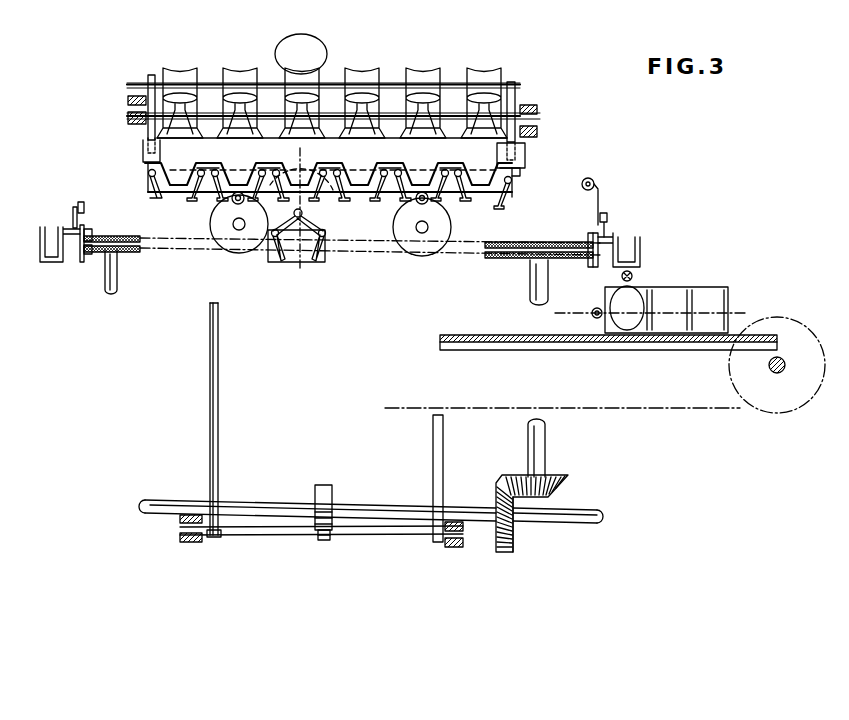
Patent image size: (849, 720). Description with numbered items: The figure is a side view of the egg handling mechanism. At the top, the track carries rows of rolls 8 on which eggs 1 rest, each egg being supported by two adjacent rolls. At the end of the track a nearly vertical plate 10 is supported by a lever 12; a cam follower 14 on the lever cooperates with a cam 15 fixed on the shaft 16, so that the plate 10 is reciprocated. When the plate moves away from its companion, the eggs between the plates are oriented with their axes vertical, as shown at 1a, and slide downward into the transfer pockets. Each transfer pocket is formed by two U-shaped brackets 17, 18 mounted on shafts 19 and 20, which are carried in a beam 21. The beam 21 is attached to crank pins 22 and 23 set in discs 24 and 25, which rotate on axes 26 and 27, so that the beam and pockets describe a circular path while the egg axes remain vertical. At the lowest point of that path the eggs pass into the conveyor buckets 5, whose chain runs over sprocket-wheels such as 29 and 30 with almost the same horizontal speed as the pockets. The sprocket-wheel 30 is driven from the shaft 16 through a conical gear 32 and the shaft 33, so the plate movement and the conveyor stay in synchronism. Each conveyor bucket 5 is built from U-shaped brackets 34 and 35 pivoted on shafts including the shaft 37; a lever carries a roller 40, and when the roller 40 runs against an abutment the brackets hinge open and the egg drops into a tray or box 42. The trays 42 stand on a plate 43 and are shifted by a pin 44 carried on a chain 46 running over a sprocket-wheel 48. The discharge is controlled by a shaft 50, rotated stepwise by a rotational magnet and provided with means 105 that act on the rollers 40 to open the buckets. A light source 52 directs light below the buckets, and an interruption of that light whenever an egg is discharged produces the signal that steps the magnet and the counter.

The egg 1 is at (280, 46).
The egg oriented with vertical axis 1a is at (318, 152).
The conveyor bucket 5 is at (52, 232).
The roll 8 is at (172, 68).
The plate 10 is at (530, 156).
The lever 12 is at (219, 380).
The cam follower 14 is at (330, 536).
The cam 15 is at (324, 485).
The shaft 16 is at (259, 500).
The U-shaped bracket 17 is at (465, 204).
The U-shaped bracket 18 is at (504, 208).
The shaft 19 is at (459, 173).
The shaft 20 is at (516, 180).
The beam 21 is at (146, 182).
The crank pin 22 is at (232, 202).
The crank pin 23 is at (416, 203).
The disc 24 is at (240, 254).
The disc 25 is at (442, 256).
The axis 26 is at (236, 230).
The axis 27 is at (420, 233).
The sprocket-wheel 29 is at (136, 255).
The sprocket-wheel 30 is at (494, 258).
The conical gear 32 is at (568, 477).
The shaft 33 is at (527, 434).
The U-shaped bracket 34 is at (283, 262).
The U-shaped bracket 35 is at (314, 262).
The shaft 37 is at (330, 232).
The roller 40 is at (79, 204).
The tray or box 42 is at (706, 287).
The plate 43 is at (622, 346).
The pin 44 is at (592, 311).
The chain 46 is at (683, 411).
The sprocket-wheel 48 is at (812, 394).
The shaft 50 is at (583, 187).
The light source 52 is at (633, 275).
The bucket opening means 105 is at (589, 178).